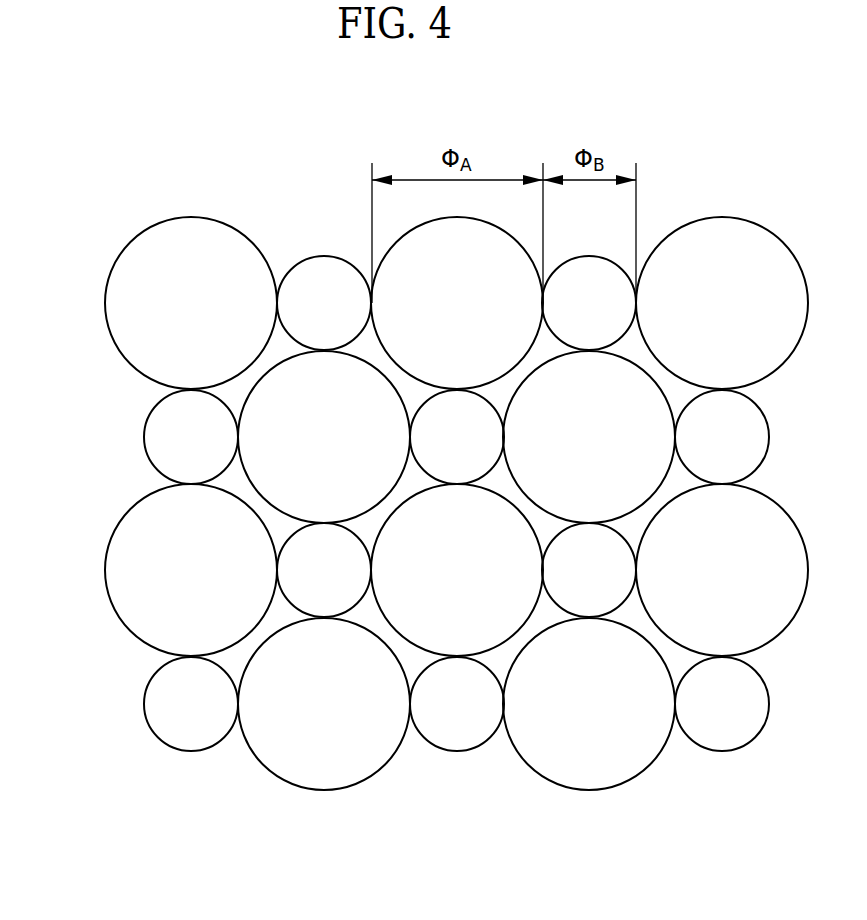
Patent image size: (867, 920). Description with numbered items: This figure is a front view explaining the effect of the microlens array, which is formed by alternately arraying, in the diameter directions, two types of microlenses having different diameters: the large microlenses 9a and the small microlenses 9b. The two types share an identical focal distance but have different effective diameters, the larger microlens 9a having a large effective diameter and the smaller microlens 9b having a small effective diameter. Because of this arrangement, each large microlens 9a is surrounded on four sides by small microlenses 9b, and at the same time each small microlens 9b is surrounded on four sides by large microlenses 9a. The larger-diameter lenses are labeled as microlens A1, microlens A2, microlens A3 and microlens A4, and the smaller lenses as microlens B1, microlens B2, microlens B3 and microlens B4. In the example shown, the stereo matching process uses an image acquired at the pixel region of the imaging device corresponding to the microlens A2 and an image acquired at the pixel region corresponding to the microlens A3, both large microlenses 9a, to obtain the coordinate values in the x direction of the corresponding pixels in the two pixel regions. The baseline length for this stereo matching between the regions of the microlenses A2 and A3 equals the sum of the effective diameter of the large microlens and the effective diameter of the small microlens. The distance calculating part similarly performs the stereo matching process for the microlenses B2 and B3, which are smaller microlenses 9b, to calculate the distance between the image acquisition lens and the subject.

The large microlens 9a is at (419, 473).
The small microlens 9b is at (418, 469).
The microlens A1 is at (457, 303).
The microlens A2 is at (324, 437).
The microlens A3 is at (589, 437).
The microlens A4 is at (457, 570).
The microlens B1 is at (457, 437).
The microlens B2 is at (324, 570).
The microlens B3 is at (589, 570).
The microlens B4 is at (457, 704).